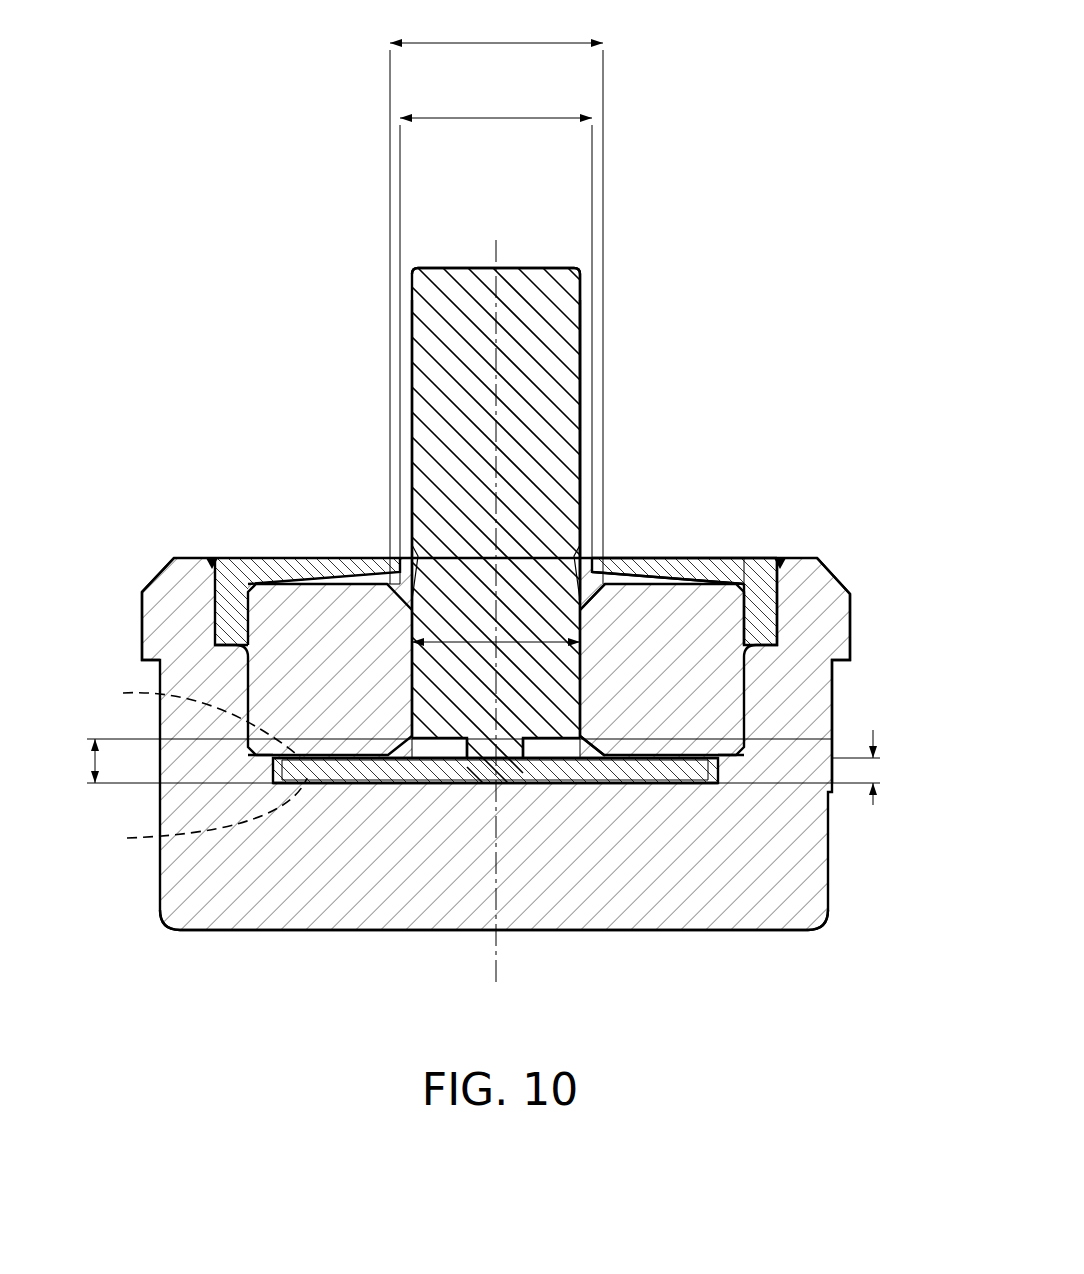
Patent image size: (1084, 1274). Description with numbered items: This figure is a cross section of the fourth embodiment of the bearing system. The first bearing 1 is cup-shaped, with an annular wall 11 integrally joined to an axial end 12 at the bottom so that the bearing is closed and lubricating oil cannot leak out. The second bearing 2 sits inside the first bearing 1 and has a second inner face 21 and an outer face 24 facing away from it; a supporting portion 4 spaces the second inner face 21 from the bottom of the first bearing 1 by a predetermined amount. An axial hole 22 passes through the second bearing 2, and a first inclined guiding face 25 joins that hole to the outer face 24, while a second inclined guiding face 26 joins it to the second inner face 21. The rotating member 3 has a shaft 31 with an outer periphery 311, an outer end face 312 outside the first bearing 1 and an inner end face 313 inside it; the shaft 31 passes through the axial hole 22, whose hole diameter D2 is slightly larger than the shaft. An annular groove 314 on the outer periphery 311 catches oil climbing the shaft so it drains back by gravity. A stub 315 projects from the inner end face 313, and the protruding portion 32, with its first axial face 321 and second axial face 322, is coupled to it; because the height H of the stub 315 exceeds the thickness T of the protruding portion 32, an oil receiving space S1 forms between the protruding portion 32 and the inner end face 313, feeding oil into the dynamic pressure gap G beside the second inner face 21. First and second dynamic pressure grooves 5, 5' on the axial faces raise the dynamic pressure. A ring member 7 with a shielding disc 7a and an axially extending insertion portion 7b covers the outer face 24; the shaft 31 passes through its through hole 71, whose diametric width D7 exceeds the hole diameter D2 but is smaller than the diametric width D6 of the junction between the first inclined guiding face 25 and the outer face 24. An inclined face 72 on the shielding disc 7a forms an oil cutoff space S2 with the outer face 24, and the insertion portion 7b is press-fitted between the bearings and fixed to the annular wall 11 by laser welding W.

The first bearing 1 is at (206, 935).
The annular wall 11 is at (166, 622).
The axial end 12 is at (382, 913).
The second bearing 2 is at (802, 664).
The second inner face 21 is at (698, 784).
The axial hole 22 is at (400, 660).
The outer face 24 is at (396, 579).
The first inclined guiding face 25 is at (622, 582).
The second inclined guiding face 26 is at (632, 783).
The rotating member 3 is at (411, 298).
The shaft 31 is at (556, 343).
The outer periphery 311 is at (586, 405).
The outer end face 312 is at (540, 263).
The inner end face 313 is at (462, 750).
The annular groove 314 is at (410, 556).
The stub 315 is at (515, 772).
The protruding portion 32 is at (457, 782).
The first axial face 321 is at (710, 785).
The second axial face 322 is at (648, 756).
The supporting portion 4 is at (267, 767).
The first dynamic pressure grooves 5 is at (201, 816).
The second dynamic pressure grooves 5' is at (199, 716).
The ring member 7 is at (896, 480).
The shielding disc 7a is at (733, 576).
The insertion portion 7b is at (770, 600).
The through hole 71 is at (582, 576).
The inclined face 72 is at (604, 590).
The dynamic pressure gap G is at (662, 751).
The oil receiving space S1 is at (574, 762).
The oil cutoff space S2 is at (372, 576).
The laser welding W is at (210, 556).
The height of the stub H is at (76, 761).
The thickness of the protruding portion T is at (886, 767).
The hole diameter D2 is at (496, 621).
The diametric width of the connection area D6 is at (496, 293).
The diametric width of the through hole D7 is at (496, 320).